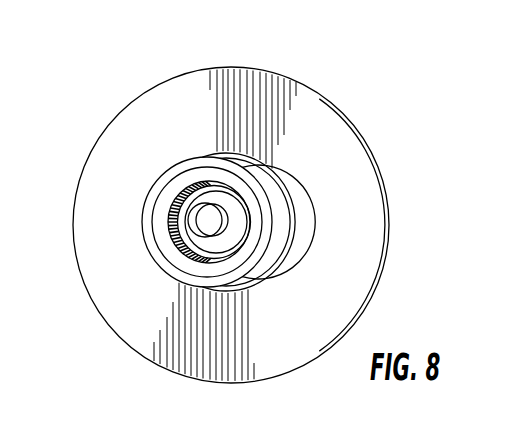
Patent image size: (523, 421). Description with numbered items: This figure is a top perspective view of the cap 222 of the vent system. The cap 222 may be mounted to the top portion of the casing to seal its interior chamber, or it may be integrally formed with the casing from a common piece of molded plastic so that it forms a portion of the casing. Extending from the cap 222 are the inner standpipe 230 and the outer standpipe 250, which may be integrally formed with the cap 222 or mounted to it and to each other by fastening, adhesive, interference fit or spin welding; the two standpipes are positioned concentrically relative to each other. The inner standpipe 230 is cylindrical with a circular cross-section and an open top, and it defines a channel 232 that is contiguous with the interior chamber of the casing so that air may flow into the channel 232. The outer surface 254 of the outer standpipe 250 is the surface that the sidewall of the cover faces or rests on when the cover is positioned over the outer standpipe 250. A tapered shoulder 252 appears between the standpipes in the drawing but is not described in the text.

The cap 222 is at (211, 198).
The outer standpipe 250 is at (275, 222).
The outer surface 254 is at (181, 222).
The inner wall 252 is at (193, 189).
The inner standpipe 230 is at (266, 240).
The channel 232 is at (165, 253).